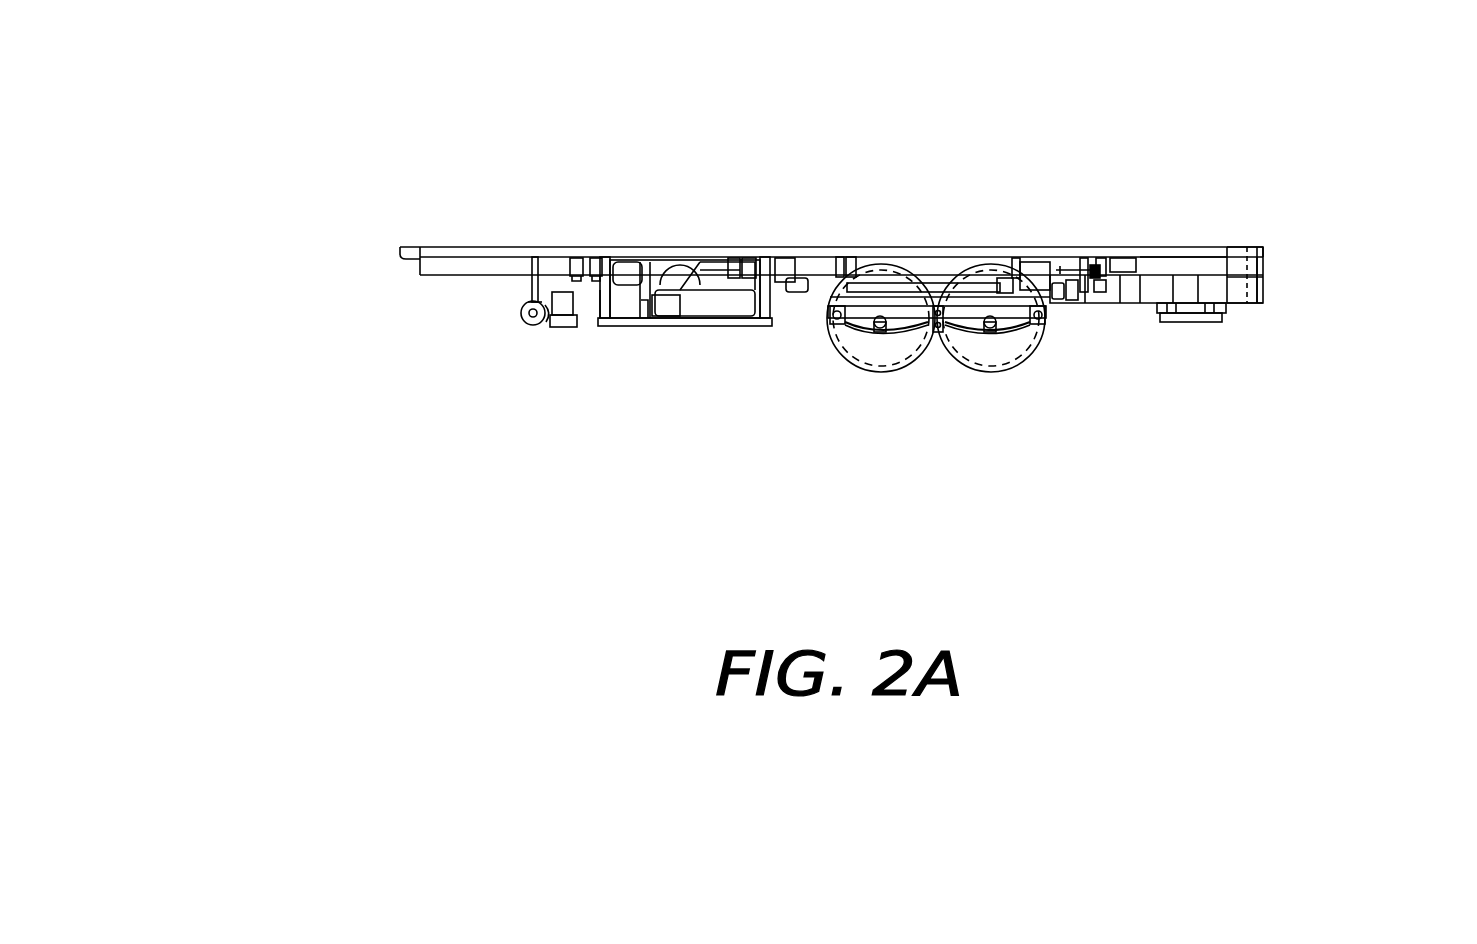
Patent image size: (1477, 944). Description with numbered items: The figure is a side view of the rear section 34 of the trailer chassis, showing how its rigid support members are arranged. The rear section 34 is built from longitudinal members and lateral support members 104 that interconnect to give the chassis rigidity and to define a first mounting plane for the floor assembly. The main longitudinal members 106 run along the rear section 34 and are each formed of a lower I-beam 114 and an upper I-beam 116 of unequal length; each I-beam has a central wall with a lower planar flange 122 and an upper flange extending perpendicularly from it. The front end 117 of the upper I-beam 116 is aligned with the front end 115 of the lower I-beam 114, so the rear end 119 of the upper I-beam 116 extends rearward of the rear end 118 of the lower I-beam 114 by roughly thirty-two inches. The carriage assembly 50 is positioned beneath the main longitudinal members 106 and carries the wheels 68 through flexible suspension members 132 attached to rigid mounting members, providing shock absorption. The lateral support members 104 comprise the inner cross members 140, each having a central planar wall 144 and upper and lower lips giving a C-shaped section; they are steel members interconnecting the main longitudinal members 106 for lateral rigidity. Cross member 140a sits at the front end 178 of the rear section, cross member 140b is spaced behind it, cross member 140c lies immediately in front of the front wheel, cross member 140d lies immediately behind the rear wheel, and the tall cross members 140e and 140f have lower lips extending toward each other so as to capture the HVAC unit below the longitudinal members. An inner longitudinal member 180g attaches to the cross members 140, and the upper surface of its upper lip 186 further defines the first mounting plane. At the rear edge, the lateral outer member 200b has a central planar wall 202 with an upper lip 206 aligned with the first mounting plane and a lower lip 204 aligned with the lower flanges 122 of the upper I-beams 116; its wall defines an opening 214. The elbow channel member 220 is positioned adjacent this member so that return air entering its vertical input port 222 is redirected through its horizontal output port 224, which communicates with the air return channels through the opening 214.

The rear section 34 is at (575, 150).
The lateral support members 104 is at (646, 208).
The vertical input port 222 is at (420, 260).
The upper lip 206 is at (422, 258).
The central planar wall 202 is at (422, 258).
The horizontal output port 224 is at (422, 258).
The opening 214 is at (420, 262).
The elbow channel member 220 is at (420, 262).
The lateral outer member 200b is at (420, 265).
The rear end of the upper I-beam 119 is at (420, 268).
The lower lip 204 is at (420, 273).
The lower planar flange 122 is at (440, 276).
The inner longitudinal member 180g is at (533, 247).
The rear end of the lower I-beam 118 is at (522, 291).
The central planar wall 144 is at (620, 356).
The cross member 140f is at (604, 290).
The cross member 140e is at (733, 247).
The cross member 140d is at (847, 247).
The flexible suspension members 132 is at (858, 293).
The cross member 140c is at (1042, 262).
The cross member 140b is at (1100, 258).
The inner cross members 140 is at (1133, 256).
The upper I-beam 116 is at (1178, 255).
The front end of the upper I-beam 117 is at (1267, 255).
The cross member 140a is at (1265, 277).
The front end of the lower I-beam 115 is at (1265, 287).
The front end 178 is at (1265, 293).
The lower I-beam 114 is at (1145, 290).
The main longitudinal members 106 is at (1122, 290).
The carriage assembly 50 is at (860, 404).
The wheels 68 is at (994, 352).
The upper lip 186 is at (832, 314).